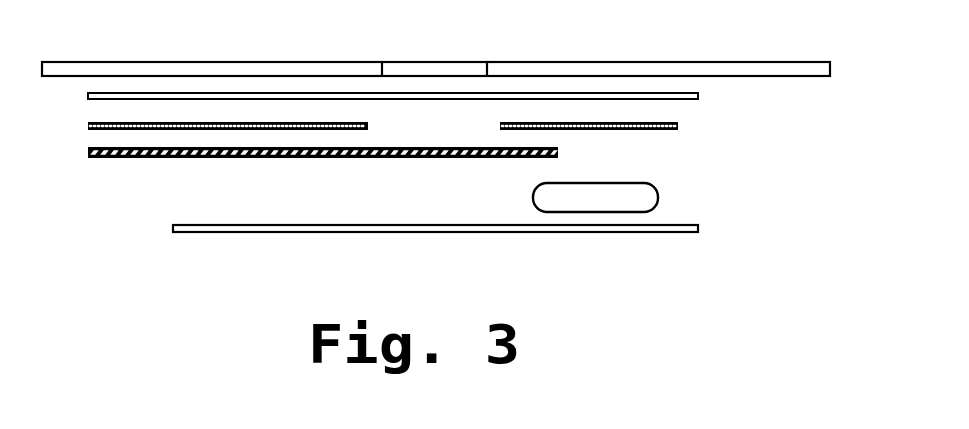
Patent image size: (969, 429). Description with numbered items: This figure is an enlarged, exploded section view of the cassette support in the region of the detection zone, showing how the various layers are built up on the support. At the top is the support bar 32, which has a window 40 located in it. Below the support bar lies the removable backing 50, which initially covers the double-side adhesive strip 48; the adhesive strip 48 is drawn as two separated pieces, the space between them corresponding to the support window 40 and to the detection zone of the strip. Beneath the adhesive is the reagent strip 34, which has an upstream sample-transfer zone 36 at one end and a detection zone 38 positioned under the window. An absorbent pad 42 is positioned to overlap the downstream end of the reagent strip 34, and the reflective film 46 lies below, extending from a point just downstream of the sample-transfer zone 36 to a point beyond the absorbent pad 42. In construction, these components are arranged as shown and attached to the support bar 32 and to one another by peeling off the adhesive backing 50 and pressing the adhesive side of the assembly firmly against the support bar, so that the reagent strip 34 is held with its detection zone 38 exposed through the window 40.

The support bar 32 is at (757, 63).
The window 40 is at (476, 62).
The removable backing 50 is at (700, 95).
The double-side adhesive strip 48 is at (678, 124).
The reagent strip 34 is at (240, 158).
The upstream sample-transfer zone 36 is at (140, 158).
The detection zone 38 is at (438, 158).
The absorbent pad 42 is at (650, 186).
The reflective film 46 is at (172, 228).